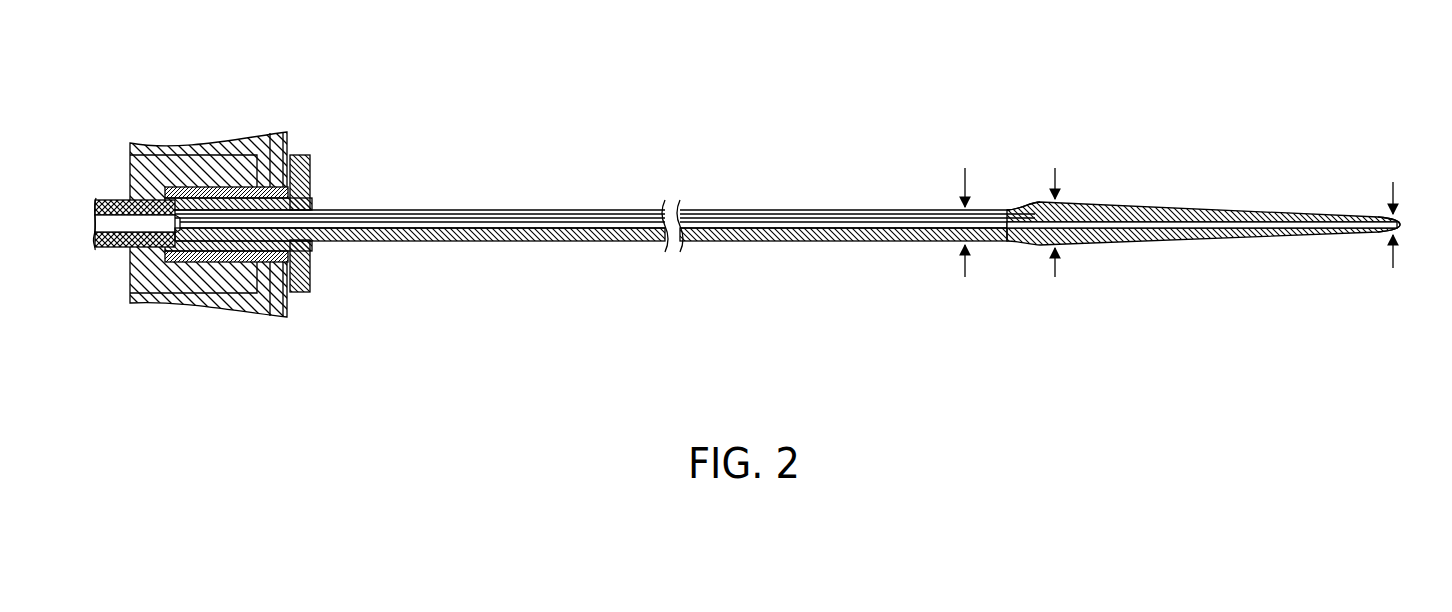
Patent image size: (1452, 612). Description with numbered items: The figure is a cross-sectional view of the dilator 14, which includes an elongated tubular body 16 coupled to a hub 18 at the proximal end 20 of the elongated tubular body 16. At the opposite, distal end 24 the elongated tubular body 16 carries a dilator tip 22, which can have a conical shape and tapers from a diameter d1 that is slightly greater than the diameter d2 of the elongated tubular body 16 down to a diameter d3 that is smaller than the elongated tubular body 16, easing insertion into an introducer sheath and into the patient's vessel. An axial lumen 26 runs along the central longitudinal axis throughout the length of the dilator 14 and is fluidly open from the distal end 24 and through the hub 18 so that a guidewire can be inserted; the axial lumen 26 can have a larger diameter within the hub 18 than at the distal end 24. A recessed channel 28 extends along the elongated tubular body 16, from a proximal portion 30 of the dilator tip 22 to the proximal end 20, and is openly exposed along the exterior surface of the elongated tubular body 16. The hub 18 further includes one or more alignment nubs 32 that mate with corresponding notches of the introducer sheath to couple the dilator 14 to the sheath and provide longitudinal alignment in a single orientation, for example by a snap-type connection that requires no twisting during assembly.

The dilator 14 is at (768, 205).
The elongated tubular body 16 is at (786, 228).
The hub 18 is at (224, 141).
The proximal end 20 is at (205, 305).
The dilator tip 22 is at (1200, 243).
The distal end 24 is at (1406, 225).
The axial lumen 26 is at (740, 226).
The recessed channel 28 is at (812, 213).
The proximal portion 30 is at (1010, 208).
The alignment nub 32 is at (300, 155).
The diameter d1 is at (1059, 211).
The diameter d2 is at (969, 215).
The diameter d3 is at (1397, 212).